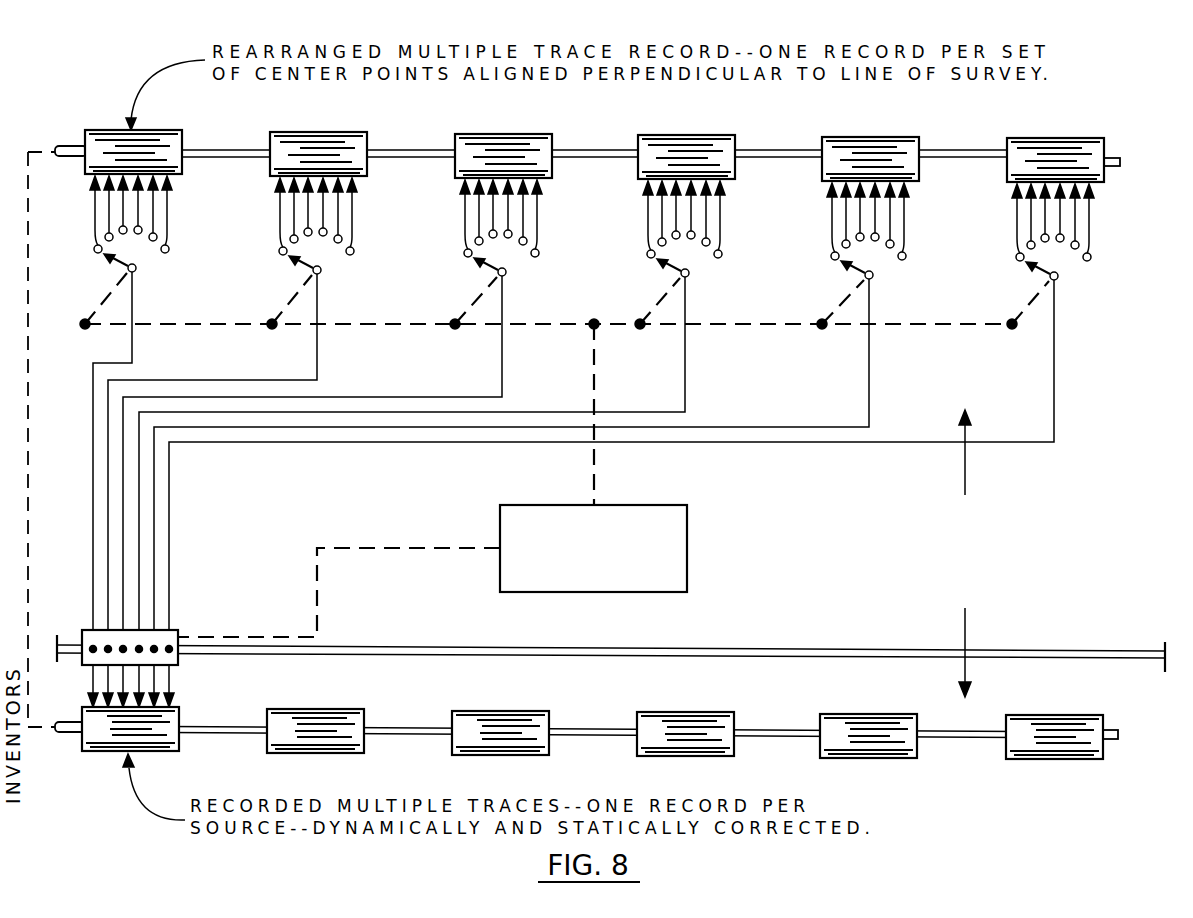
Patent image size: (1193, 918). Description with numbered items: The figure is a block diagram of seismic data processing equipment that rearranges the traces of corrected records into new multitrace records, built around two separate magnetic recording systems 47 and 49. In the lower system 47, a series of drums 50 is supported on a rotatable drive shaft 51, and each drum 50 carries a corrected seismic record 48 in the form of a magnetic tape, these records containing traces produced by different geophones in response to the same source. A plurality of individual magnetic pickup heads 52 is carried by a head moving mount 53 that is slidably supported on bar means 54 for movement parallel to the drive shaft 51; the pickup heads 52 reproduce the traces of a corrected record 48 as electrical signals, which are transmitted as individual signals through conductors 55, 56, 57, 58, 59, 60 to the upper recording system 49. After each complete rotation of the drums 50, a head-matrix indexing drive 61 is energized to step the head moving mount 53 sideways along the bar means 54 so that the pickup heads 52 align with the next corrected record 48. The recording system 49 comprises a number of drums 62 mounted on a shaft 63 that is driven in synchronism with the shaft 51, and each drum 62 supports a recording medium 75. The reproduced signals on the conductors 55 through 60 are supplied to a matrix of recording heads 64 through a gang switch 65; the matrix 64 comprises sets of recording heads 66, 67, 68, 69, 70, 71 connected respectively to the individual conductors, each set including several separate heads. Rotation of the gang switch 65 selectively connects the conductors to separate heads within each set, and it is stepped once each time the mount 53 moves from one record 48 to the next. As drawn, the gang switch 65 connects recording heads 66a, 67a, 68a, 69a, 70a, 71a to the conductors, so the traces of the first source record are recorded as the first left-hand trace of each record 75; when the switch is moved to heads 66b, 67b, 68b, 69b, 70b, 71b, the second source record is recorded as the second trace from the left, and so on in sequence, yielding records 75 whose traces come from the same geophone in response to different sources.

The magnetic recording system 47 is at (963, 642).
The corrected seismic record 48 is at (90, 748).
The magnetic recording system 49 is at (963, 463).
The drum 50 is at (170, 748).
The rotatable drive shaft 51 is at (67, 722).
The magnetic pickup heads 52 is at (168, 698).
The head moving mount 53 is at (178, 632).
The bar means 54 is at (868, 646).
The conductor 55 is at (132, 345).
The conductor 56 is at (317, 352).
The conductor 57 is at (502, 360).
The conductor 58 is at (685, 367).
The conductor 59 is at (869, 374).
The conductor 60 is at (1054, 381).
The head-matrix indexing drive 61 is at (690, 548).
The drum 62 is at (173, 145).
The shaft 63 is at (62, 147).
The matrix of recording heads 64 is at (181, 188).
The gang switch 65 is at (355, 290).
The set of recording heads 66 is at (174, 230).
The recording head 66a is at (93, 188).
The recording head 66b is at (107, 195).
The set of recording heads 67 is at (359, 232).
The recording head 67a is at (278, 190).
The recording head 67b is at (292, 197).
The set of recording heads 68 is at (544, 234).
The recording head 68a is at (463, 192).
The recording head 68b is at (477, 199).
The set of recording heads 69 is at (731, 235).
The recording head 69a is at (646, 193).
The recording head 69b is at (660, 200).
The set of recording heads 70 is at (914, 237).
The recording head 70a is at (830, 195).
The recording head 70b is at (844, 202).
The set of recording heads 71 is at (1099, 238).
The recording head 71a is at (1015, 196).
The recording head 71b is at (1029, 203).
The recording medium 75 is at (90, 147).